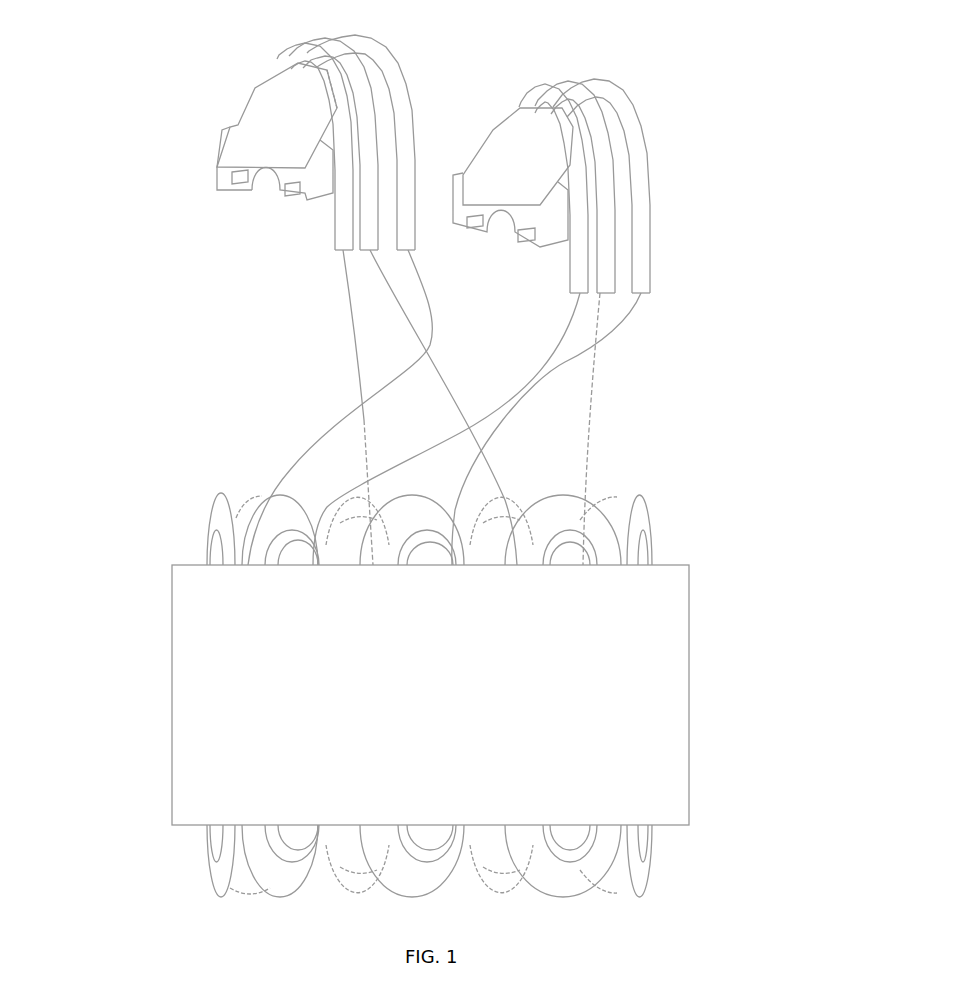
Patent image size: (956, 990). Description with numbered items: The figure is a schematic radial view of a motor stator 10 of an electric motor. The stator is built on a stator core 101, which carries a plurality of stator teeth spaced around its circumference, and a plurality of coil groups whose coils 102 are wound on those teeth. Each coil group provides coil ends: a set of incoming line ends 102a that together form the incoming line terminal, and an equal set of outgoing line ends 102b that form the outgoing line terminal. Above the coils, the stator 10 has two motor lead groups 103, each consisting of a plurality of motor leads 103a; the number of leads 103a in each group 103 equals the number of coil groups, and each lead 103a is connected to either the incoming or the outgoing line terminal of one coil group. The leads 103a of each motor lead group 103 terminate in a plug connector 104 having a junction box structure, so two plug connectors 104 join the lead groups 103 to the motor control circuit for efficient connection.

The motor stator 10 is at (126, 316).
The stator core 101 is at (212, 697).
The coils 102 is at (220, 523).
The incoming line ends 102a is at (430, 314).
The outgoing line ends 102b is at (622, 328).
The motor lead group 103 is at (191, 190).
The motor leads 103a is at (372, 200).
The plug connector 104 is at (258, 133).